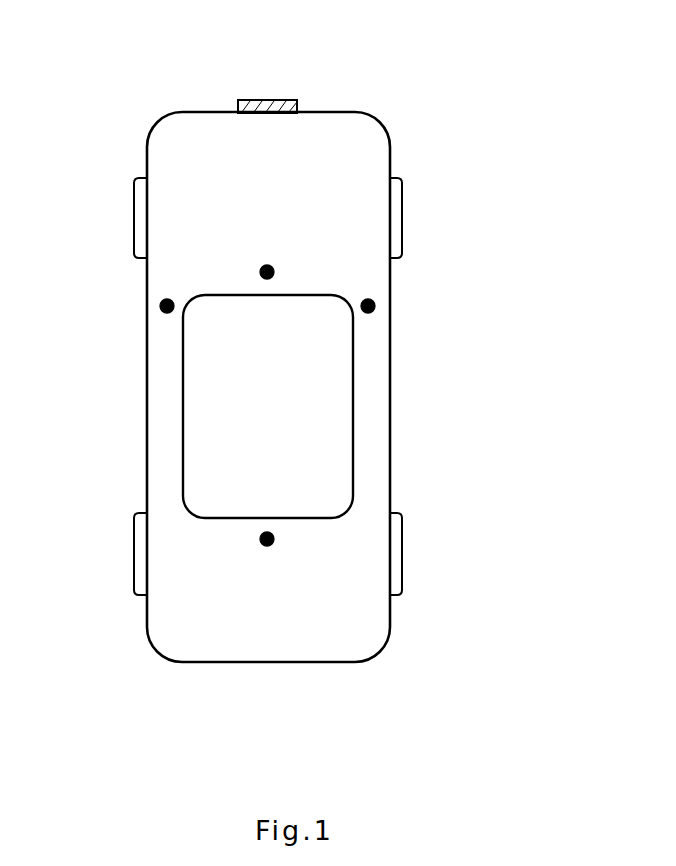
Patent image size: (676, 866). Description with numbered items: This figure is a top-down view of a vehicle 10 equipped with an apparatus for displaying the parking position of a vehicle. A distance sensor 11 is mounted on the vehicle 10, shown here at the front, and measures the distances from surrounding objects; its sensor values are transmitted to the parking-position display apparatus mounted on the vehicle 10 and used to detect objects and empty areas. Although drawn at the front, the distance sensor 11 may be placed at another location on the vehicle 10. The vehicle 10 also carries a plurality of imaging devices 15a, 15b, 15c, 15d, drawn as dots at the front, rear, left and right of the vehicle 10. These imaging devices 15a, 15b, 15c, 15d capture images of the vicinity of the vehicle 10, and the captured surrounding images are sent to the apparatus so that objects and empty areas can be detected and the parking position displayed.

The vehicle 10 is at (397, 96).
The distance sensor 11 is at (270, 99).
The imaging device 15a is at (272, 269).
The imaging device 15b is at (267, 546).
The imaging device 15c is at (160, 306).
The imaging device 15d is at (375, 306).